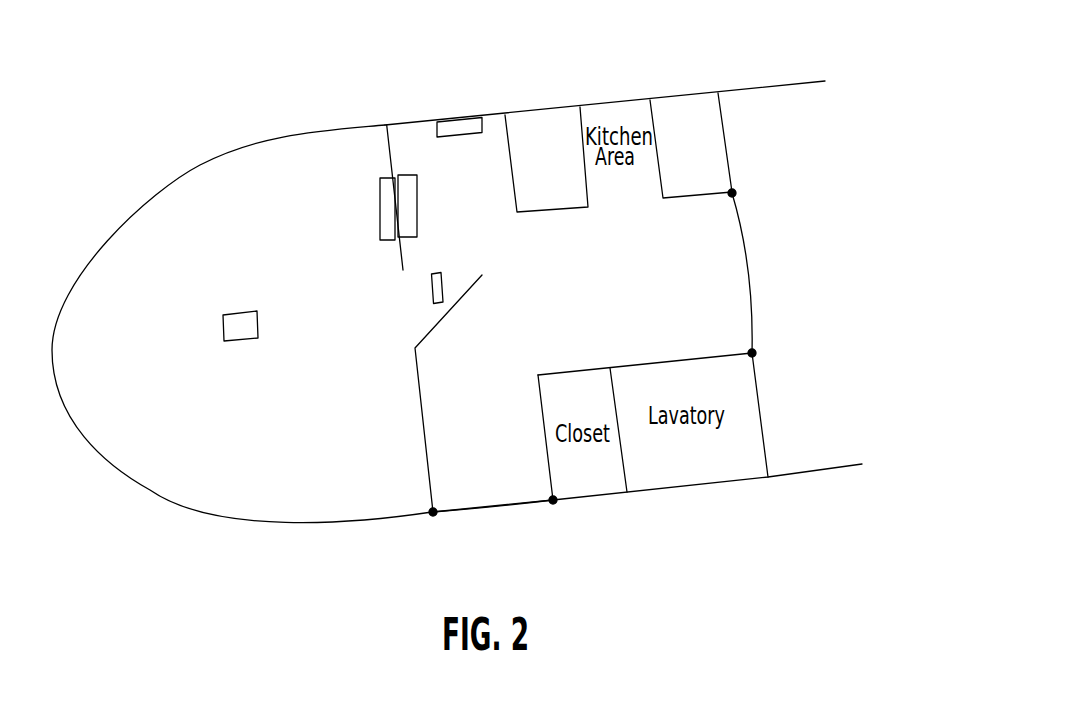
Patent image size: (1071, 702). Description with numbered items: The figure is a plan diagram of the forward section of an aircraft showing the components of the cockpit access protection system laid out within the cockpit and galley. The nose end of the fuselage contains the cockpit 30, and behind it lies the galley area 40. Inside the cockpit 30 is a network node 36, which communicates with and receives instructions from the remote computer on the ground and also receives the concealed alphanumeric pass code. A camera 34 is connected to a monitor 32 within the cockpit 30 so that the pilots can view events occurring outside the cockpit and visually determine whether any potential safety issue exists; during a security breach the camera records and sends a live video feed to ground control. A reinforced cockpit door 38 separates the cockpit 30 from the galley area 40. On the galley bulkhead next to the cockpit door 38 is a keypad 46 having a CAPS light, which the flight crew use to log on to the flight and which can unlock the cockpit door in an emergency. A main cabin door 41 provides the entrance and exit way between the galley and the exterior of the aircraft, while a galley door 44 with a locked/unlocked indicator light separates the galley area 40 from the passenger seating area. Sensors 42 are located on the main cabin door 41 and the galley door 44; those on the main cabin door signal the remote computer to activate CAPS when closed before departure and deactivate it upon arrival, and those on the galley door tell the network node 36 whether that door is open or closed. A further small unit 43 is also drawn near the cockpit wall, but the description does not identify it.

The cockpit 30 is at (266, 398).
The monitor 32 is at (240, 313).
The camera 34 is at (430, 289).
The network node 36 is at (381, 208).
The reinforced cockpit door 38 is at (450, 313).
The galley area 40 is at (609, 303).
The main cabin door 41 is at (497, 507).
The sensors 42 is at (736, 192).
The overhead unit 43 is at (460, 137).
The galley door 44 is at (750, 273).
The keypad 46 is at (417, 208).